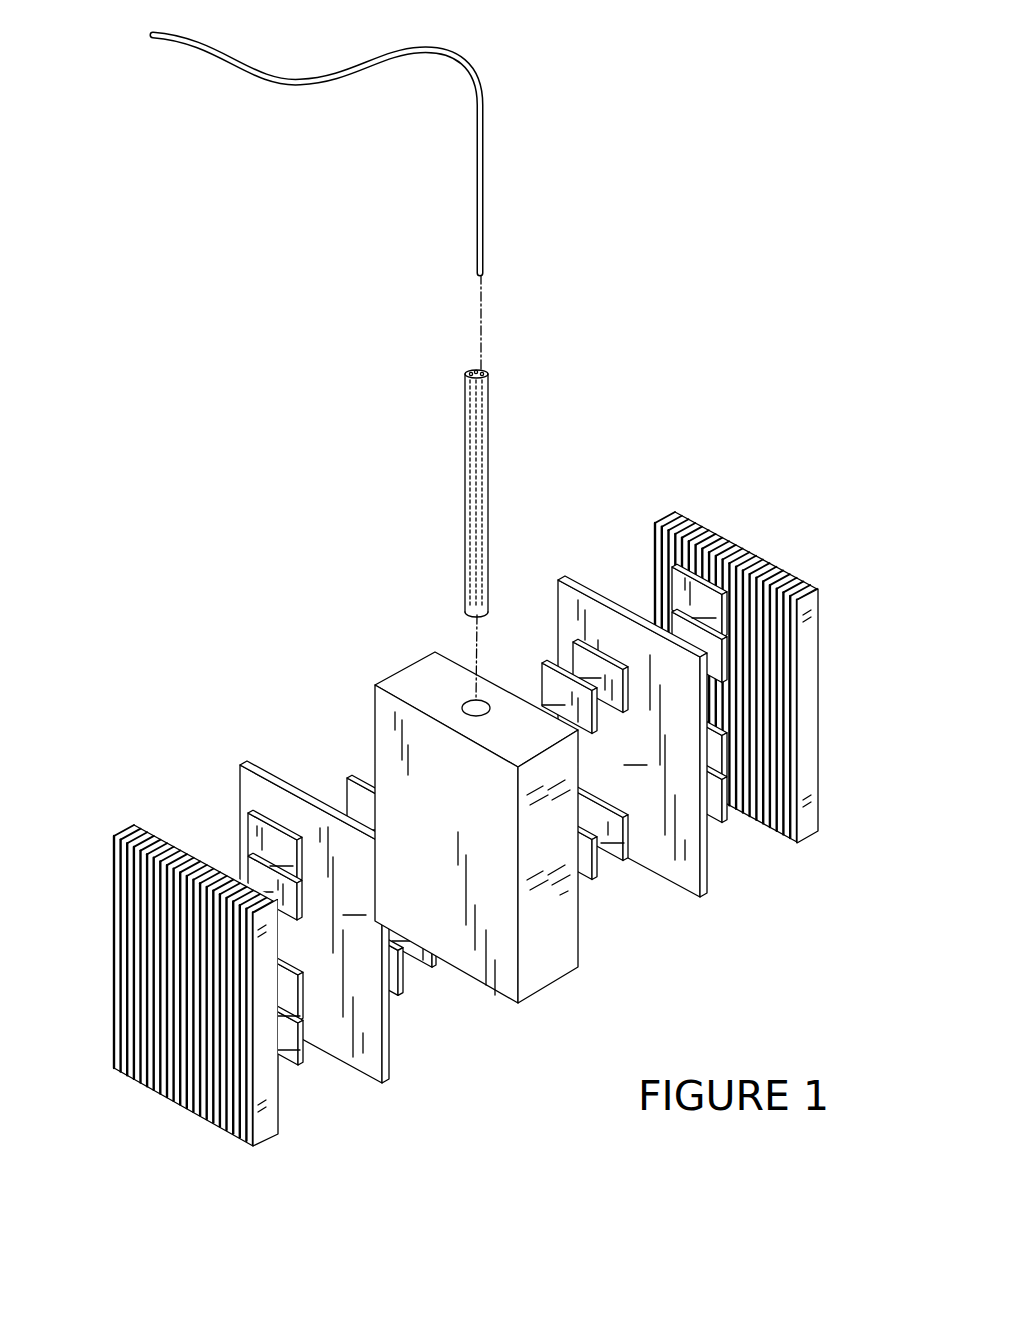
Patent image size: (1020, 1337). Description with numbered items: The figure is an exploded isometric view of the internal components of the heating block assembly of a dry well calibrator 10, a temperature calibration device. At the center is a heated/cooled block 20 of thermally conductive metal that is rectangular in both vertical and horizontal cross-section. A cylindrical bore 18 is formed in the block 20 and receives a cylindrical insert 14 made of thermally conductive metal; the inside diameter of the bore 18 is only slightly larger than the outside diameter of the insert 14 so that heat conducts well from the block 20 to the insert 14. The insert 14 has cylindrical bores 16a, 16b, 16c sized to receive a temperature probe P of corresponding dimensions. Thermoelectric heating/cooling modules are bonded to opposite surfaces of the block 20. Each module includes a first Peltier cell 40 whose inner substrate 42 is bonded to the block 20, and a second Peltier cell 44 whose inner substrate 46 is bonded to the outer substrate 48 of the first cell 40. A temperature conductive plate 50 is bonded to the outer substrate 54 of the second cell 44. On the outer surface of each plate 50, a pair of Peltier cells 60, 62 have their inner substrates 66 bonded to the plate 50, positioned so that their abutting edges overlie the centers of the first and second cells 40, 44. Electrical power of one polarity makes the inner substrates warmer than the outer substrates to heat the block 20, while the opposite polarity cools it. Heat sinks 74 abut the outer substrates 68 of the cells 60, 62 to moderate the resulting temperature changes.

The temperature probe P is at (483, 195).
The dry well calibrator 10 is at (641, 413).
The cylindrical insert 14 is at (489, 498).
The cylindrical bore 16a is at (490, 376).
The cylindrical bore 16b is at (466, 376).
The cylindrical bore 16c is at (468, 386).
The cylindrical bore 18 is at (470, 703).
The heated/cooled block 20 is at (548, 965).
The first Peltier cell 40 is at (541, 677).
The inner substrate 42 is at (585, 873).
The second Peltier cell 44 is at (566, 650).
The inner substrate 46 is at (600, 749).
The outer substrate 48 is at (408, 860).
The temperature conductive plate 50 is at (473, 829).
The outer substrate 54 is at (405, 985).
The Peltier cell 60 is at (244, 818).
The Peltier cell 62 is at (244, 862).
The inner substrate 66 is at (684, 634).
The outer substrate 68 is at (276, 937).
The heat sink 74 is at (128, 940).